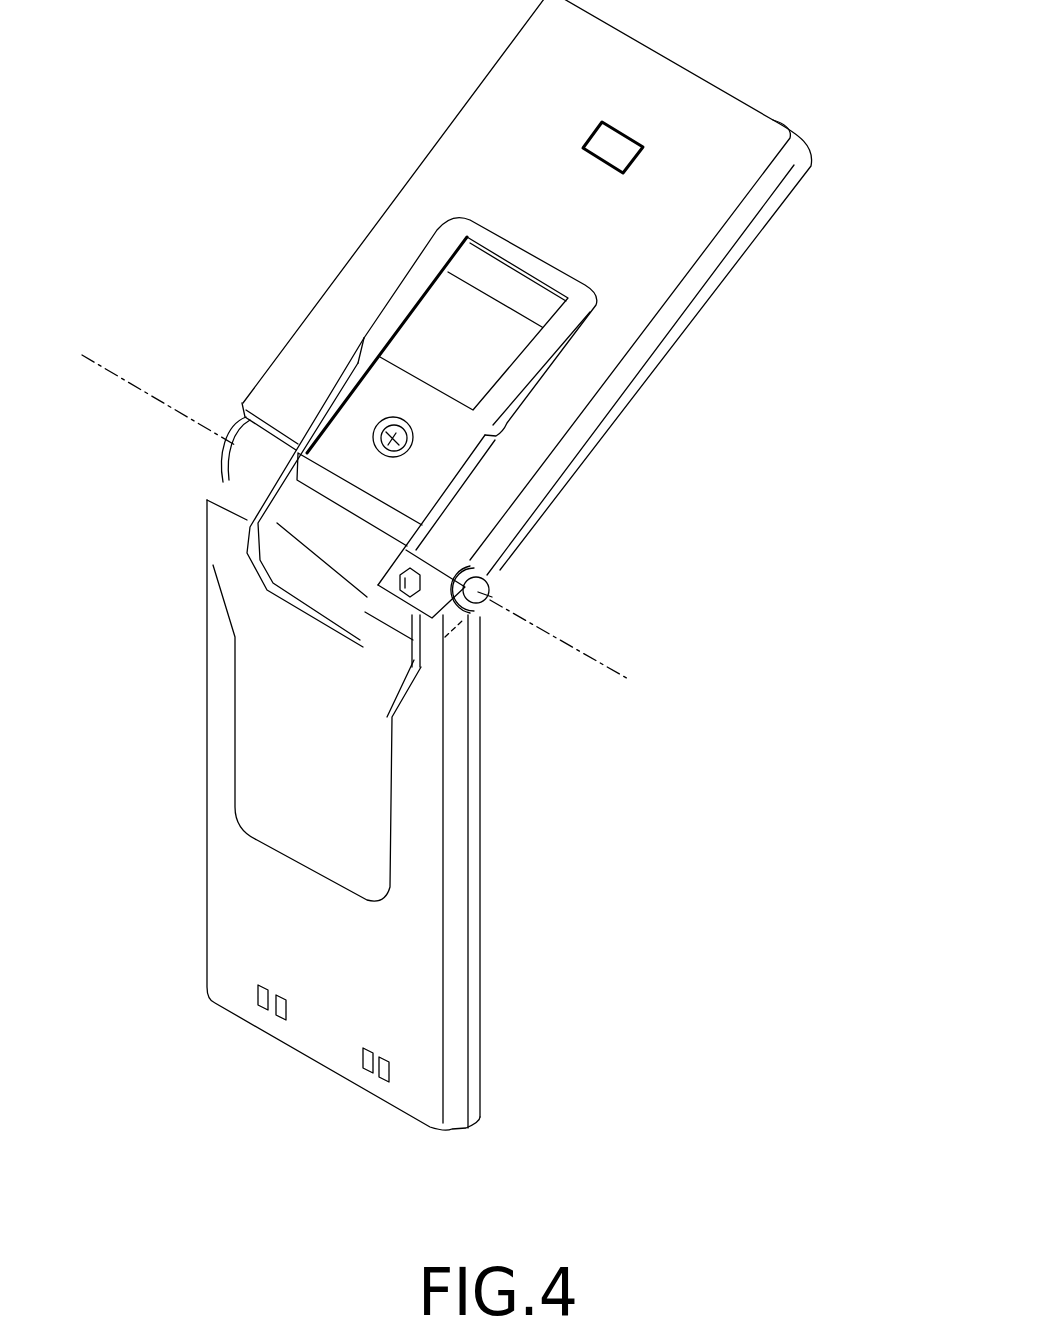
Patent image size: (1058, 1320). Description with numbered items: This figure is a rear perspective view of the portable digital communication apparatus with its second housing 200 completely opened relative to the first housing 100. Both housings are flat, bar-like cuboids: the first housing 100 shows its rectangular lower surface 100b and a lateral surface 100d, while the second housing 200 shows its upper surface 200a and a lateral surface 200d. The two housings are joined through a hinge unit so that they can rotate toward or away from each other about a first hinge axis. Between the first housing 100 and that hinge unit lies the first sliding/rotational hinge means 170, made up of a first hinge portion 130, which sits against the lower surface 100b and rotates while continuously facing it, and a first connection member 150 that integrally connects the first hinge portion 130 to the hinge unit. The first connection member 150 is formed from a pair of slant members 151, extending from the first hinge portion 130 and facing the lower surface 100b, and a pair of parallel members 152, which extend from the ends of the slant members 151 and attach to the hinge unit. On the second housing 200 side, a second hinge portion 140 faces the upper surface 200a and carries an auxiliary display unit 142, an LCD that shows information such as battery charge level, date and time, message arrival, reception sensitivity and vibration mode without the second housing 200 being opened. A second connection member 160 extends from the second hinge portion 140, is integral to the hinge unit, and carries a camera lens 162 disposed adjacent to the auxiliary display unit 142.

The first housing 100 is at (327, 825).
The lower surface 100b is at (320, 1040).
The lateral surface 100d is at (477, 1090).
The first hinge portion 130 is at (340, 817).
The second hinge portion 140 is at (455, 369).
The auxiliary display unit 142 is at (460, 315).
The first connection member 150 is at (386, 647).
The slant members 151 is at (222, 537).
The parallel members 152 is at (240, 492).
The second connection member 160 is at (403, 485).
The camera lens 162 is at (378, 418).
The first sliding/rotational hinge means 170 is at (235, 688).
The second housing 200 is at (574, 287).
The upper surface 200a is at (677, 235).
The lateral surface 200d is at (557, 495).